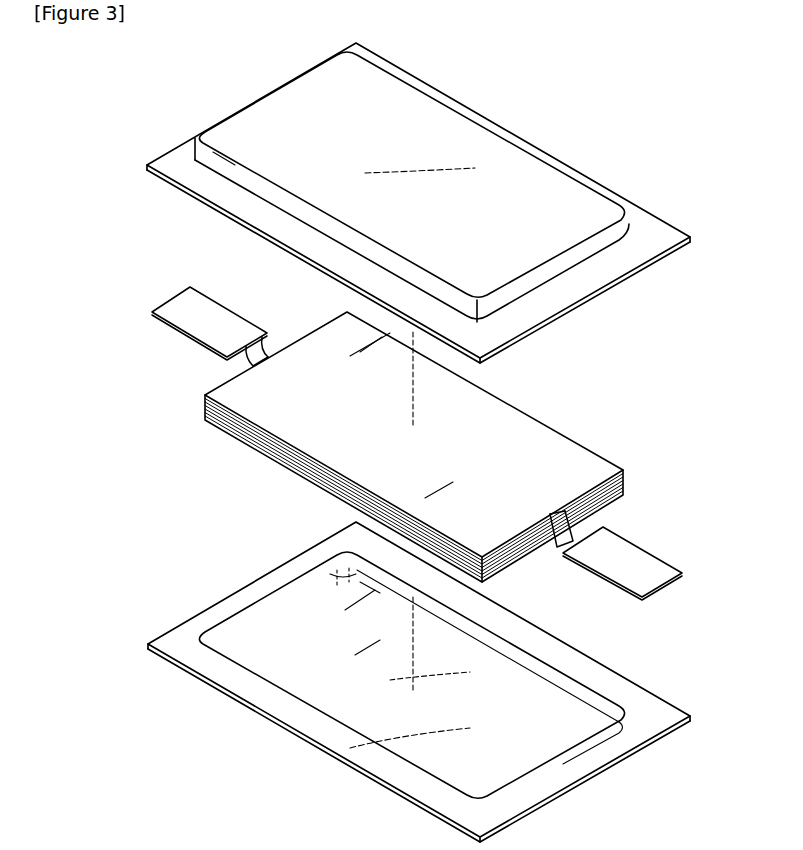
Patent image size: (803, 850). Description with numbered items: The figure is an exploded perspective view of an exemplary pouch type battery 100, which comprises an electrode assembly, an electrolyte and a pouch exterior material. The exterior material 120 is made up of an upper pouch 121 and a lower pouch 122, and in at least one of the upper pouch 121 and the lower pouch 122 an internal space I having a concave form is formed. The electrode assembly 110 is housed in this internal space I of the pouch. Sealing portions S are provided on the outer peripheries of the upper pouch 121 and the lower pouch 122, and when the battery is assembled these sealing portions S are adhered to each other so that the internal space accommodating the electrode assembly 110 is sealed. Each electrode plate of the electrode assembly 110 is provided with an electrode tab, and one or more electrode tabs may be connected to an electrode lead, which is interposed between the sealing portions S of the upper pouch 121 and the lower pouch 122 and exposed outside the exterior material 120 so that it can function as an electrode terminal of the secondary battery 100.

The pouch type battery 100 is at (697, 448).
The electrode assembly 110 is at (555, 444).
The exterior material 120 is at (97, 399).
The upper pouch 121 is at (190, 177).
The lower pouch 122 is at (190, 627).
The sealing portion S is at (660, 227).
The internal space I is at (534, 175).